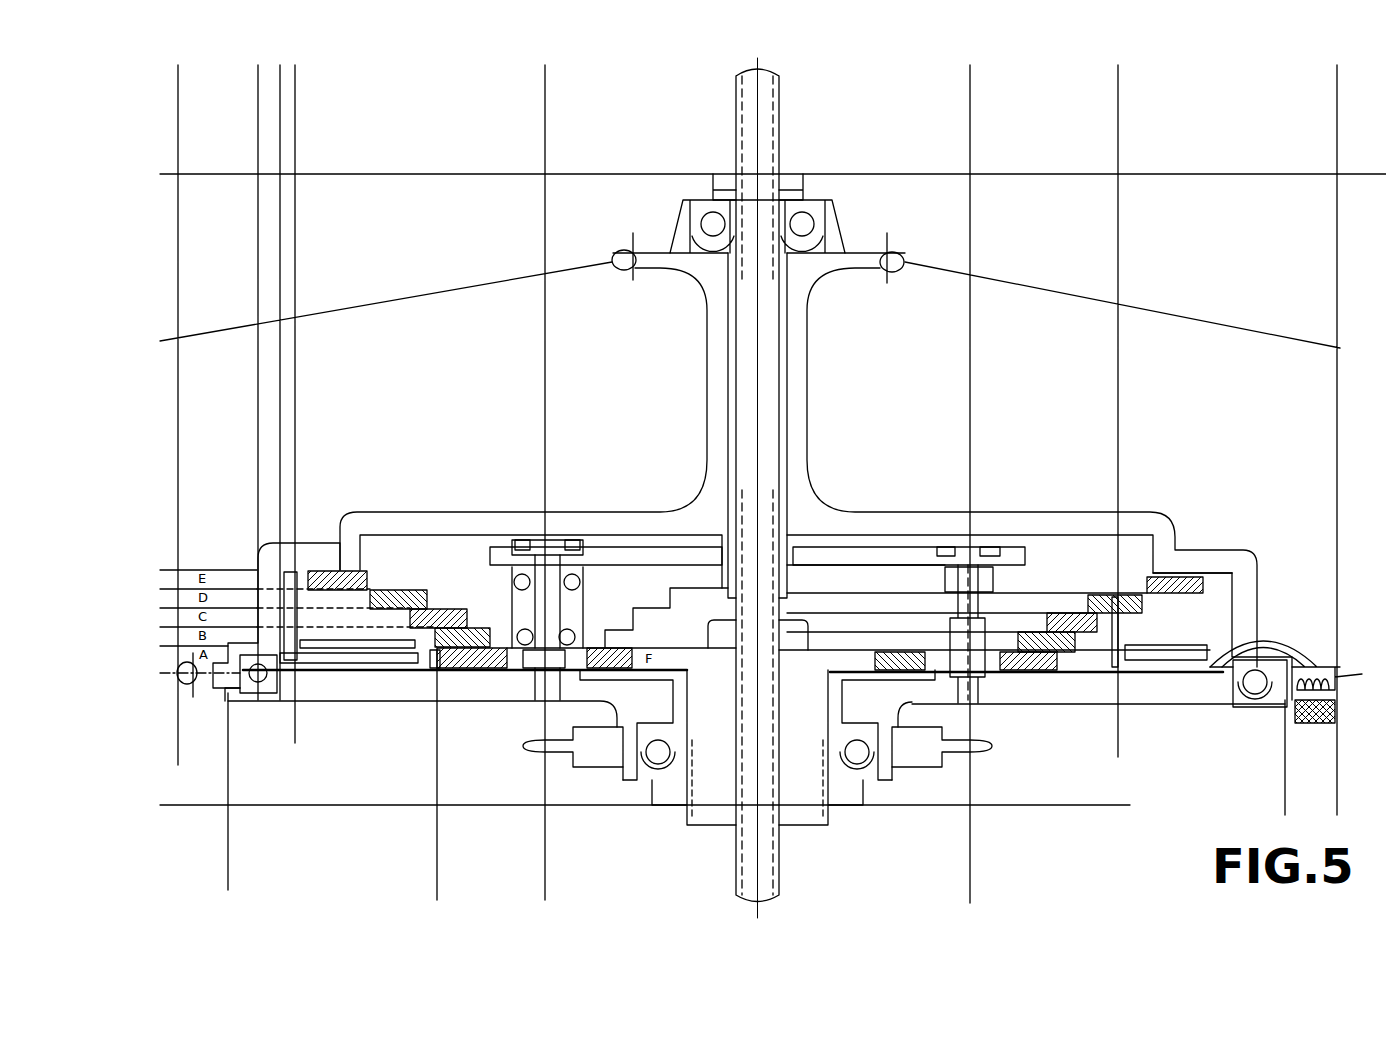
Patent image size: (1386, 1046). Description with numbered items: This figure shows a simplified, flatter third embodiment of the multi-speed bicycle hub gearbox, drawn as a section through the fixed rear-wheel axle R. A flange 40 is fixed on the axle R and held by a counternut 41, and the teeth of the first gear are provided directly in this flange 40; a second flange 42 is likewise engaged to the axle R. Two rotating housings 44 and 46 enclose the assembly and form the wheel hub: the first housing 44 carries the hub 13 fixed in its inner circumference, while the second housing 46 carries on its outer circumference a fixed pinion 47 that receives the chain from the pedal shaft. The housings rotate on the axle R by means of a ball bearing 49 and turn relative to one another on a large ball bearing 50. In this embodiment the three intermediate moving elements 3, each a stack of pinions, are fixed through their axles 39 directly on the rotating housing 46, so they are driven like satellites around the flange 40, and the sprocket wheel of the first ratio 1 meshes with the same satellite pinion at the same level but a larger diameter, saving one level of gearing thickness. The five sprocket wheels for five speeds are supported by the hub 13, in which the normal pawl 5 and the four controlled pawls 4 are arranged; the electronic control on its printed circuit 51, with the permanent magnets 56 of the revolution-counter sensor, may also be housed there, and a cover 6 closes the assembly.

The sprocket wheels 1 is at (500, 650).
The intermediate moving elements 3 is at (628, 597).
The controlled pawls 4 is at (1117, 647).
The normal pawl 5 is at (437, 660).
The cover 6 is at (1175, 652).
The hub 13 is at (400, 618).
The axles 39 is at (535, 663).
The flange 40 is at (718, 742).
The counternut 41 is at (790, 637).
The second flange 42 is at (898, 557).
The first housing 44 is at (708, 510).
The second housing 46 is at (323, 688).
The fixed pinion 47 is at (918, 745).
The ball bearing 49 is at (657, 752).
The large ball bearing 50 is at (1243, 700).
The printed circuit 51 is at (1167, 660).
The permanent magnets 56 is at (1318, 657).
The axle R is at (762, 842).